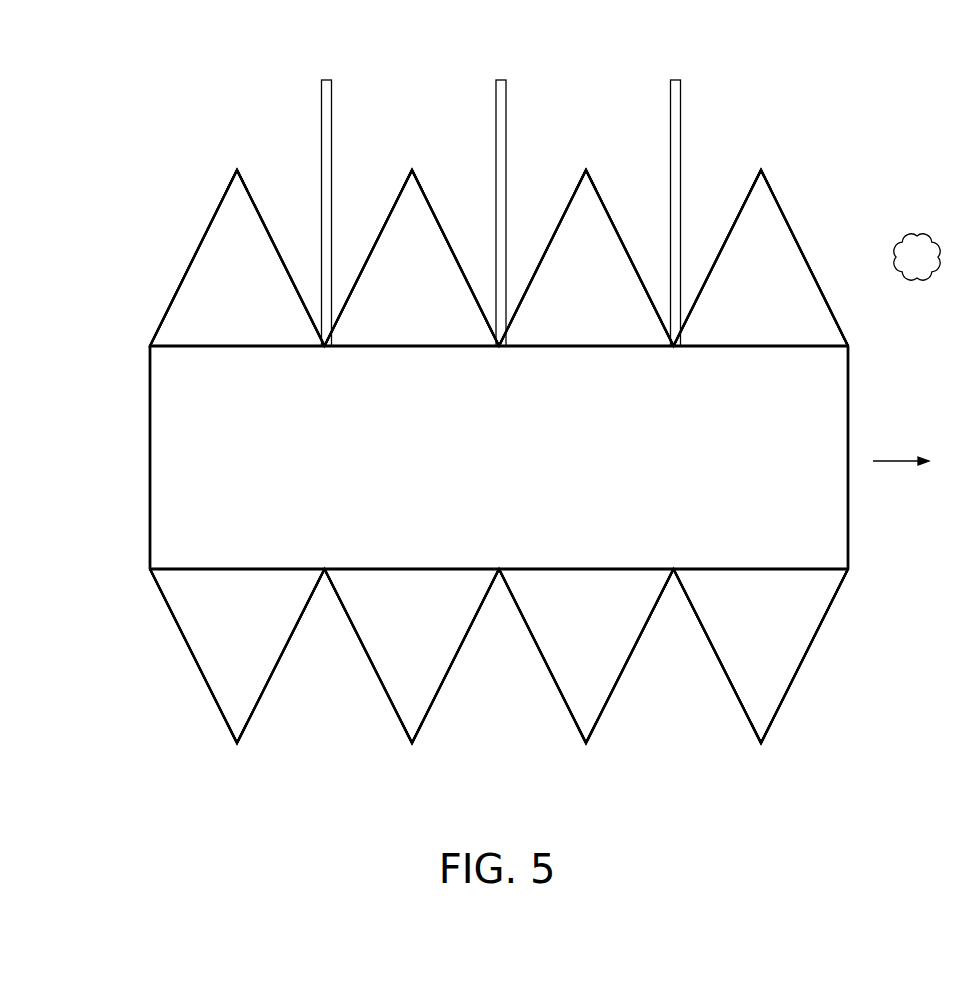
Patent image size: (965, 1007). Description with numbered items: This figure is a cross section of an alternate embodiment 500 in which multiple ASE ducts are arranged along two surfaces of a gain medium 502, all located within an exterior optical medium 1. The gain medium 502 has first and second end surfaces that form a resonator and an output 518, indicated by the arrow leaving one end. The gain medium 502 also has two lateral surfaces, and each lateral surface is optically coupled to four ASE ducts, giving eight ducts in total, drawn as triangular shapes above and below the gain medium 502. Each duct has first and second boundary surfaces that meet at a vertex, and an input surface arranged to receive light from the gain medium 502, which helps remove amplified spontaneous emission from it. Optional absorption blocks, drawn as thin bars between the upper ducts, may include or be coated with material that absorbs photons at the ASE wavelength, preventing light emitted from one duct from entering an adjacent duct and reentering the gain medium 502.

The exterior optical medium 1 is at (911, 268).
The alternate embodiment 500 is at (305, 852).
The gain medium 502 is at (477, 470).
The output 518 is at (893, 462).